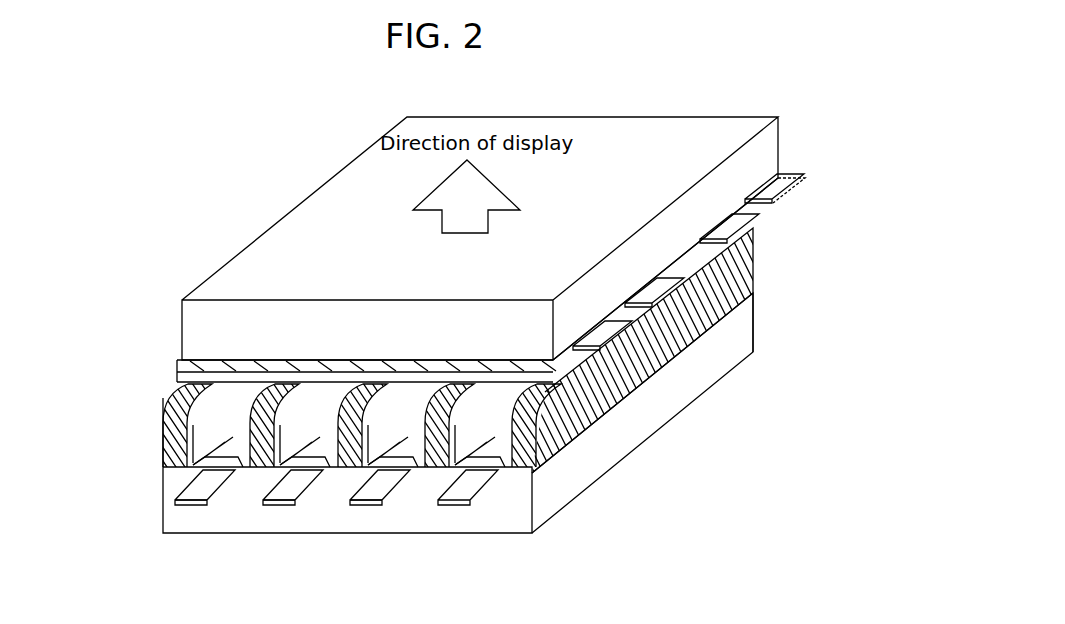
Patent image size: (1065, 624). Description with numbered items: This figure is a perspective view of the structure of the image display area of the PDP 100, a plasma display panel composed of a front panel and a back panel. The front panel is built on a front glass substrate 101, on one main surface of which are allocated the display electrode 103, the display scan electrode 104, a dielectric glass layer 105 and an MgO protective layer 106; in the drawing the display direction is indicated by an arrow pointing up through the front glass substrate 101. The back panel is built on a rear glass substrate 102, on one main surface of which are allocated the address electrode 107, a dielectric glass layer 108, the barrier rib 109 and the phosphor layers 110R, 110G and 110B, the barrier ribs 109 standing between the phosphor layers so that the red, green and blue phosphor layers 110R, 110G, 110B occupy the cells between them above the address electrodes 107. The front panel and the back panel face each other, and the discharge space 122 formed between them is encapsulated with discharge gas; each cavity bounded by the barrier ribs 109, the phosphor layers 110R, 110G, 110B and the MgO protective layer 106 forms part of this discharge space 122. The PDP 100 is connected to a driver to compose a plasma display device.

The PDP 100 is at (763, 322).
The front glass substrate 101 is at (192, 318).
The rear glass substrate 102 is at (418, 527).
The display electrode 103 is at (723, 232).
The display scan electrode 104 is at (750, 245).
The dielectric glass layer 105 is at (177, 367).
The MgO protective layer 106 is at (177, 380).
The address electrode 107 is at (198, 493).
The dielectric glass layer 108 is at (168, 470).
The barrier rib 109 is at (455, 420).
The phosphor layer 110R is at (162, 505).
The phosphor layer 110G is at (262, 503).
The phosphor layer 110B is at (352, 505).
The discharge space 122 is at (500, 402).